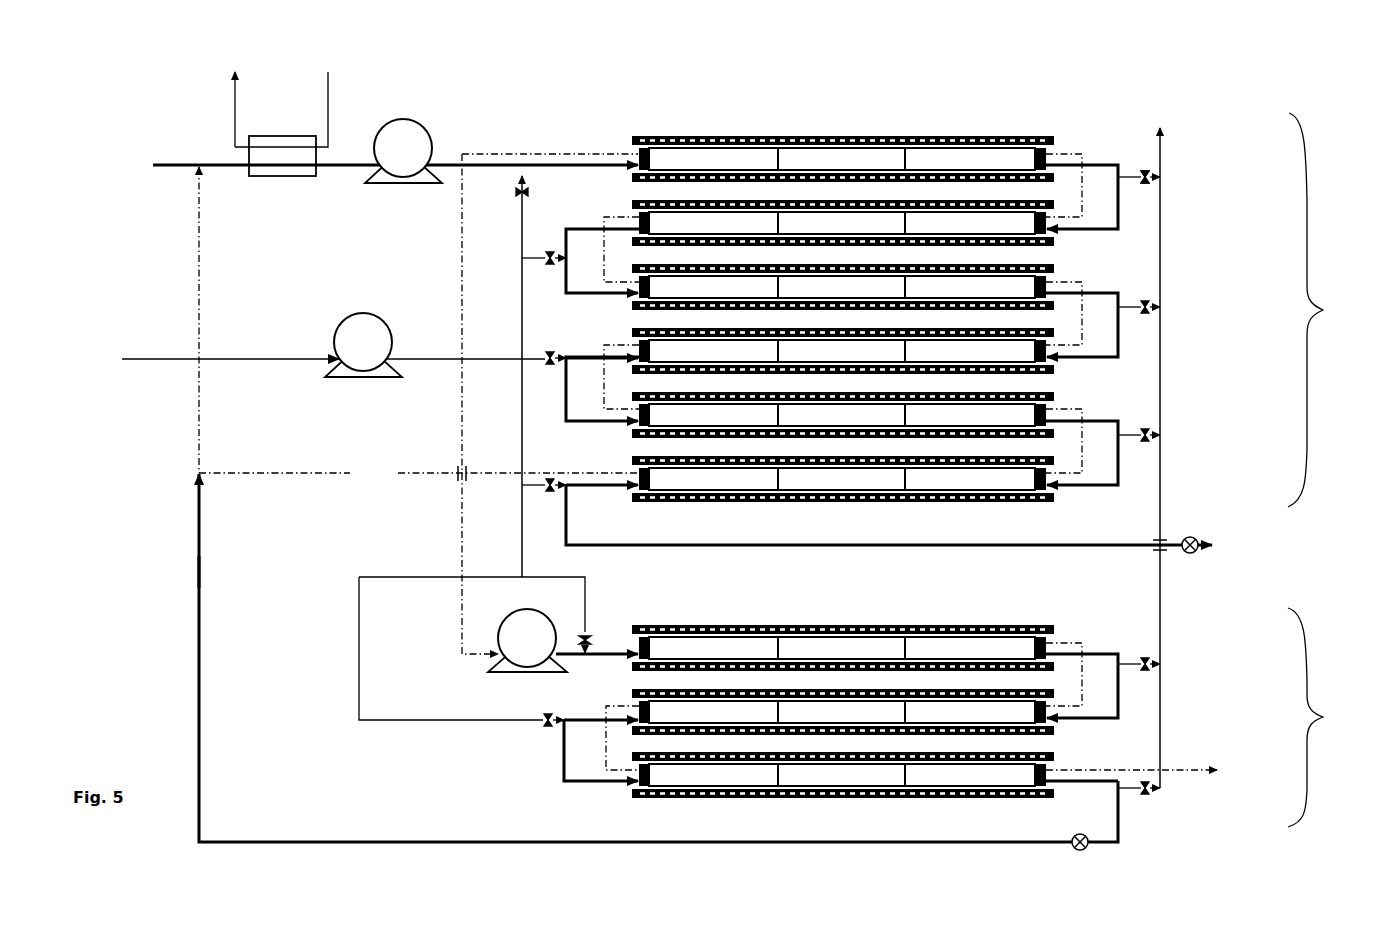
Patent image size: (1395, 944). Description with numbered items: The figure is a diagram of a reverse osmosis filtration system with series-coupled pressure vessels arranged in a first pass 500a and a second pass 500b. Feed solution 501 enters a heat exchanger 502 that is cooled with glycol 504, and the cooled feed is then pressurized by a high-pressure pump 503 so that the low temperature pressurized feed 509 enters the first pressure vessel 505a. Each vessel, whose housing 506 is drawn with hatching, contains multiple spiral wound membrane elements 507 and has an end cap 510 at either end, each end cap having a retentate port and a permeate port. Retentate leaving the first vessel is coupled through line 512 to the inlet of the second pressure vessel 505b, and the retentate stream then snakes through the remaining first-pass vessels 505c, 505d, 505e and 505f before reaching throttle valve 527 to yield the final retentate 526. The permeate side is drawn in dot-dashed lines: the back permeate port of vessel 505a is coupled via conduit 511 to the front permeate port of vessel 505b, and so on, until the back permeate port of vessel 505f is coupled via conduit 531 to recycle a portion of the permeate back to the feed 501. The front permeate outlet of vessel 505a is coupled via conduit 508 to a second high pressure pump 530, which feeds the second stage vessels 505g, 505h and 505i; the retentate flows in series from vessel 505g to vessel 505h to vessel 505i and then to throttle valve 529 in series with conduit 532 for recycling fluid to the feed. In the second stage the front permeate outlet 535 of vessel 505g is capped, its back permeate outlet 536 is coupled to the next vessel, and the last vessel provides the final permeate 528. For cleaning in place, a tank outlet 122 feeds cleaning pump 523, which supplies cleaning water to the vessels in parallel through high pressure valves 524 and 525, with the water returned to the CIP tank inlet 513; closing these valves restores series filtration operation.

The feed solution 501 is at (367, 176).
The heat exchanger 502 is at (298, 178).
The high-pressure pump 503 is at (403, 151).
The glycol 504 is at (292, 91).
The first pressure vessel 505a is at (805, 137).
The second pressure vessel 505b is at (622, 210).
The third pressure vessel 505c is at (1058, 270).
The pressure vessel 505d is at (622, 337).
The pressure vessel 505e is at (1058, 402).
The sixth pressure vessel 505f is at (622, 470).
The first pressure vessel in the second stage 505g is at (874, 630).
The pressure vessel 505h is at (1066, 728).
The pressure vessel 505i is at (622, 792).
The module housing 506 is at (758, 135).
The spiral wound membrane elements 507 is at (842, 159).
The conduit 508 is at (542, 404).
The low temperature pressurized feed 509 is at (560, 160).
The end cap 510 is at (652, 158).
The conduit 511 is at (1082, 197).
The line 512 is at (1091, 185).
The CIP tank inlet 513 is at (1155, 431).
The CIP tank outlet 122 is at (200, 375).
The cleaning pump 523 is at (445, 345).
The high pressure valve 524 is at (548, 266).
The high pressure valve 525 is at (1162, 171).
The final retentate 526 is at (935, 538).
The throttle valve 527 is at (1190, 535).
The final permeate 528 is at (1166, 780).
The throttle valve 529 is at (1072, 837).
The second high pressure pump 530 is at (475, 651).
The conduit 531 is at (419, 475).
The conduit 532 is at (652, 504).
The front permeate outlet 535 is at (622, 638).
The back permeate outlet 536 is at (1053, 637).
The first pass 500a is at (1331, 310).
The second pass 500b is at (1331, 717).